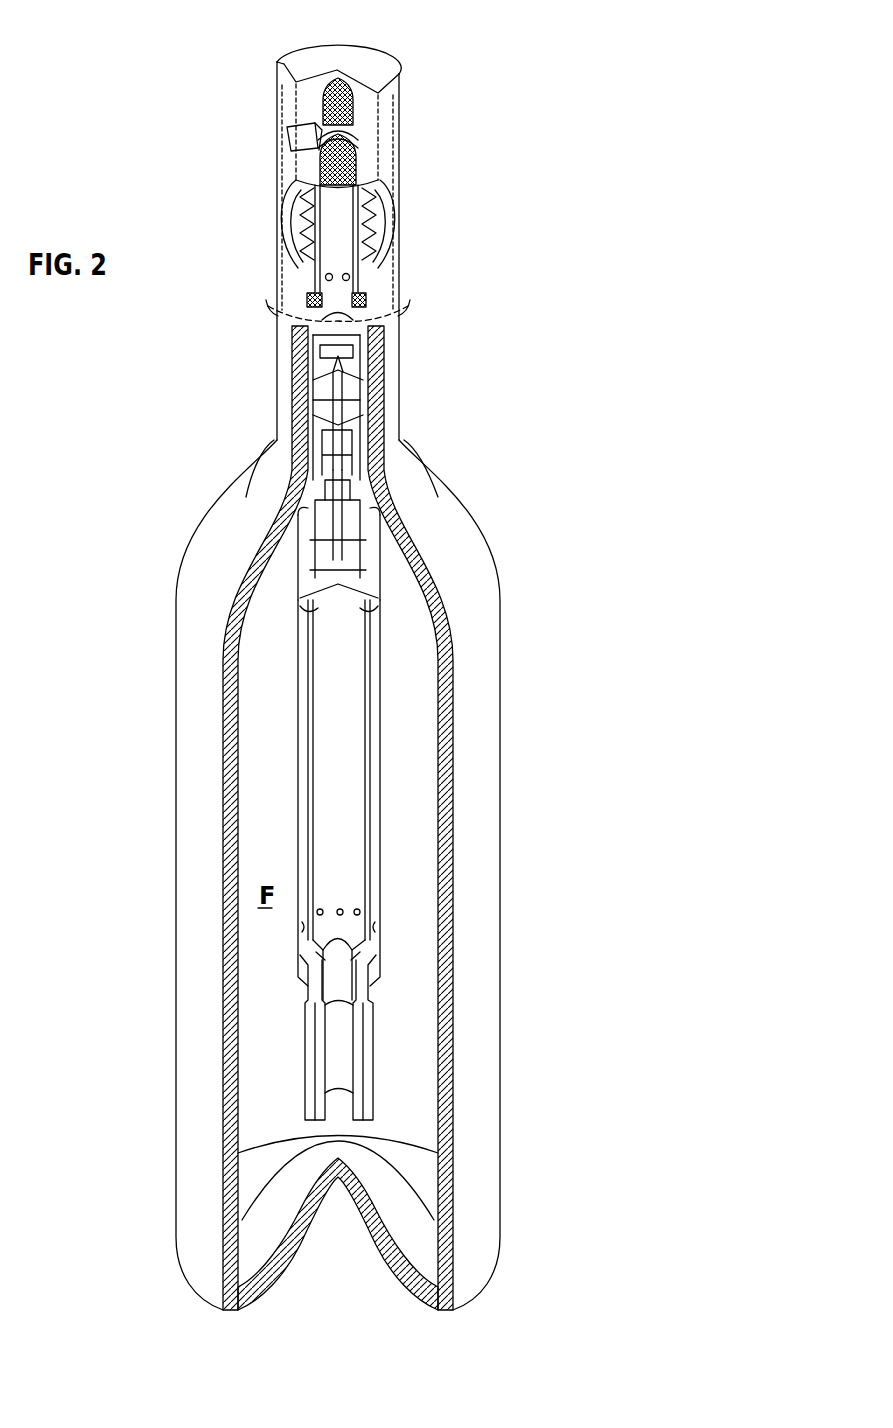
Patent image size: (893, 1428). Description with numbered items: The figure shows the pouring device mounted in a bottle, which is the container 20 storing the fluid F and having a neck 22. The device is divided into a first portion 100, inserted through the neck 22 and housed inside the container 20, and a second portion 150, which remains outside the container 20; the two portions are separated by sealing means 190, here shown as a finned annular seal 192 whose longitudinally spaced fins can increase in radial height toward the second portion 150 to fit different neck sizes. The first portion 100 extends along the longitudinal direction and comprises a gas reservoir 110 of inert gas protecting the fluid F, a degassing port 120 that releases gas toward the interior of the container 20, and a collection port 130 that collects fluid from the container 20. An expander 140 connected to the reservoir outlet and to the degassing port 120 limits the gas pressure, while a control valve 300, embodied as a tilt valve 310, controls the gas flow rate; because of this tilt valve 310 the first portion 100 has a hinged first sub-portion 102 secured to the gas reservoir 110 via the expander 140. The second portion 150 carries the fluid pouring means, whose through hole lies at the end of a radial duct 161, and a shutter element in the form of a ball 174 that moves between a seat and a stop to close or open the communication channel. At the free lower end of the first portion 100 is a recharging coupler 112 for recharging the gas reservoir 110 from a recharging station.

The container 20 is at (508, 858).
The neck 22 is at (410, 345).
The first portion 100 is at (443, 860).
The first sub-portion 102 is at (443, 860).
The gas reservoir 110 is at (355, 806).
The recharging coupler 112 is at (366, 1080).
The degassing port 120 is at (346, 347).
The collection port 130 is at (343, 292).
The expander 140 is at (388, 530).
The second portion 150 is at (344, 115).
The radial duct 161 is at (286, 140).
The ball 174 is at (333, 108).
The sealing means 190 is at (339, 263).
The finned annular seal 192 is at (302, 232).
The control valve 300 is at (412, 407).
The tilt valve 310 is at (392, 436).